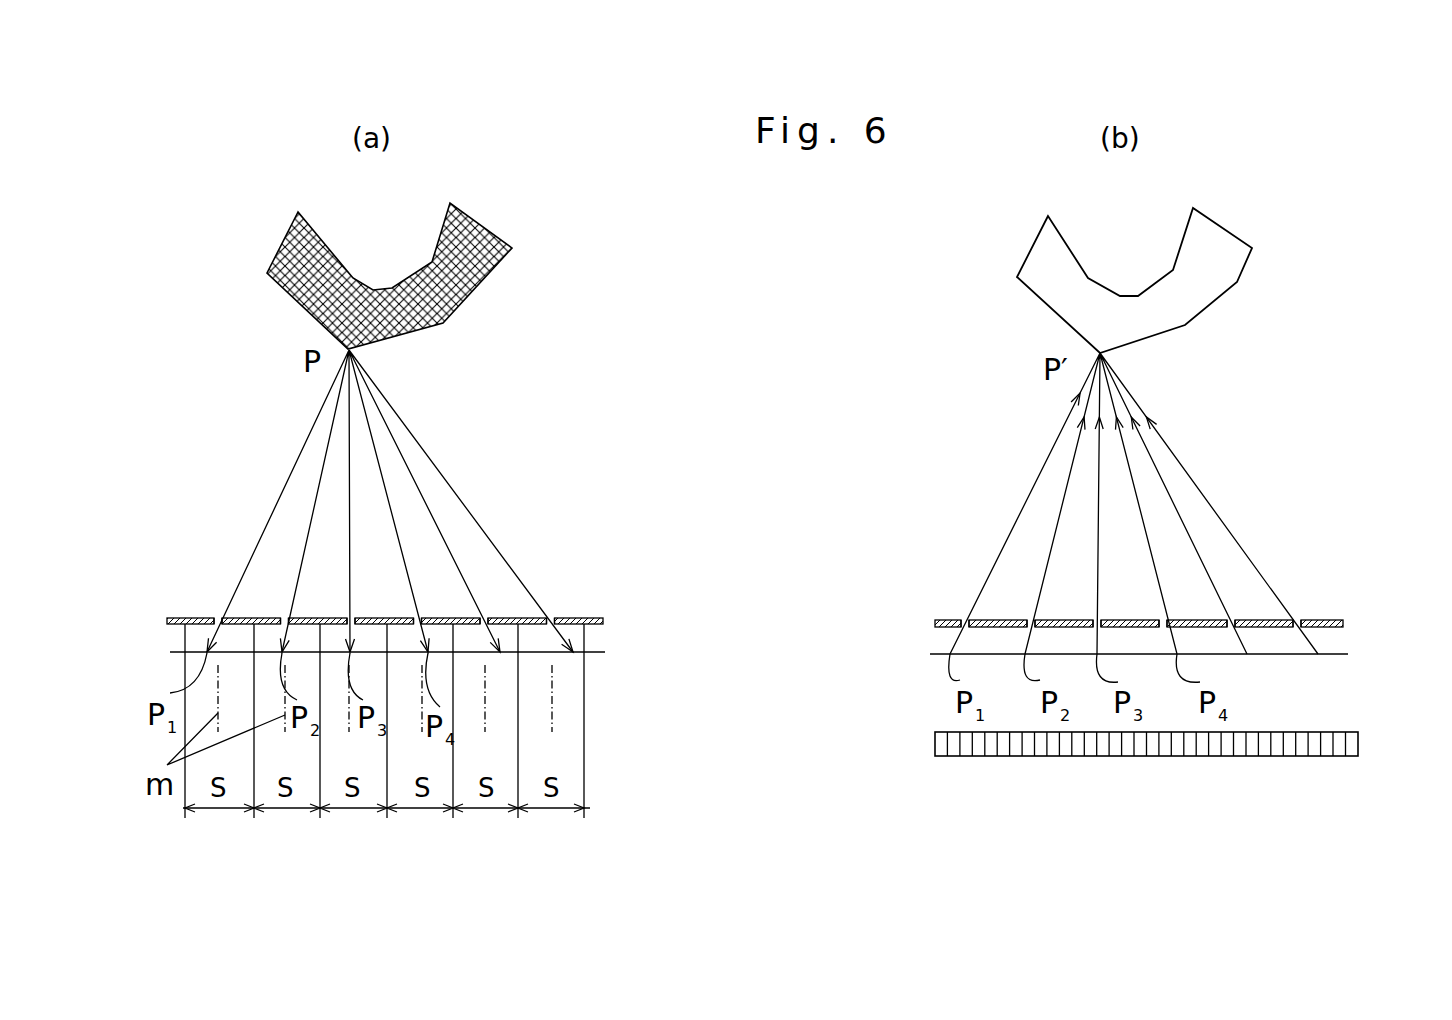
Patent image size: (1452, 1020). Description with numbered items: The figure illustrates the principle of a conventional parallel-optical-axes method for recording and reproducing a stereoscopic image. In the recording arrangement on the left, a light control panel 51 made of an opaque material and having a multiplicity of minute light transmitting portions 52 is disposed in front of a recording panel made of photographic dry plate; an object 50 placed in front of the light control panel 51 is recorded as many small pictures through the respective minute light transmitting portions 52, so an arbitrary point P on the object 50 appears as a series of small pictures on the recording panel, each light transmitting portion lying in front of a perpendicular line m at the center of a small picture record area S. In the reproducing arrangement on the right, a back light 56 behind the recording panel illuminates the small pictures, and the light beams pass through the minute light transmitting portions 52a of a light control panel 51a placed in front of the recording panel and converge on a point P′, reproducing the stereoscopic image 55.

The object 50 is at (462, 242).
The light control panel 51 is at (592, 618).
The minute light transmitting portions 52 is at (548, 617).
The reproduced stereoscopic image 55 is at (1205, 258).
The light control panel 51a is at (1328, 622).
The minute light transmitting portions 52a is at (1297, 620).
The back light 56 is at (1083, 750).